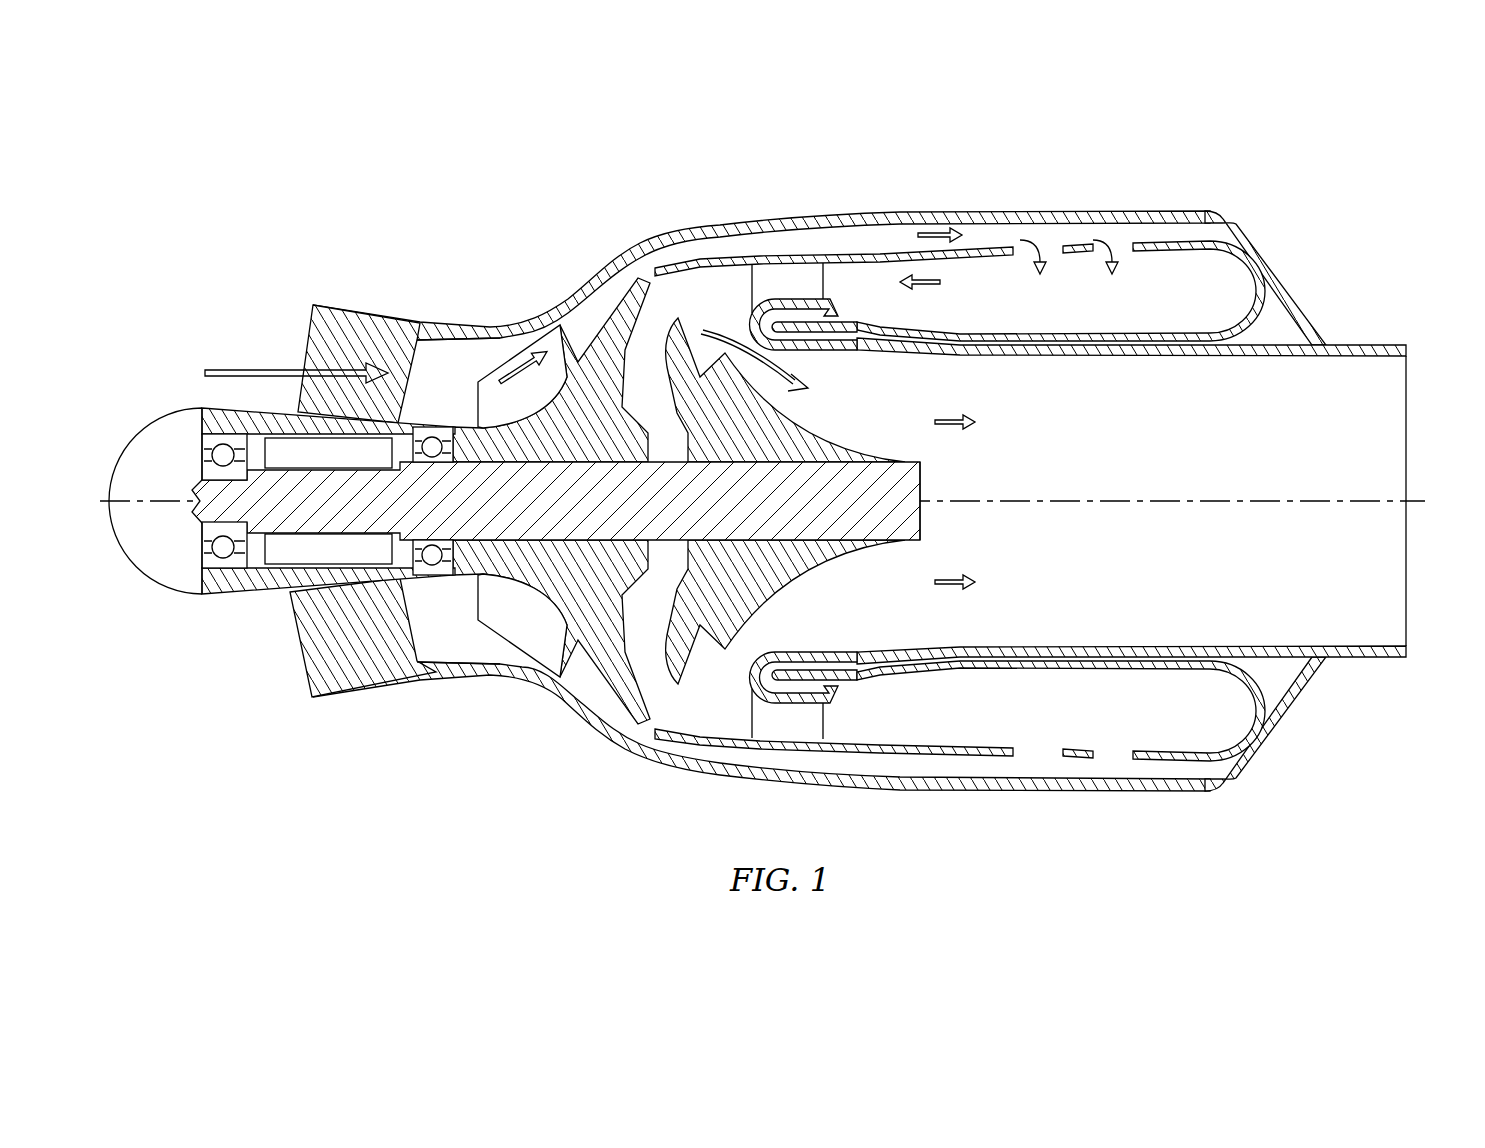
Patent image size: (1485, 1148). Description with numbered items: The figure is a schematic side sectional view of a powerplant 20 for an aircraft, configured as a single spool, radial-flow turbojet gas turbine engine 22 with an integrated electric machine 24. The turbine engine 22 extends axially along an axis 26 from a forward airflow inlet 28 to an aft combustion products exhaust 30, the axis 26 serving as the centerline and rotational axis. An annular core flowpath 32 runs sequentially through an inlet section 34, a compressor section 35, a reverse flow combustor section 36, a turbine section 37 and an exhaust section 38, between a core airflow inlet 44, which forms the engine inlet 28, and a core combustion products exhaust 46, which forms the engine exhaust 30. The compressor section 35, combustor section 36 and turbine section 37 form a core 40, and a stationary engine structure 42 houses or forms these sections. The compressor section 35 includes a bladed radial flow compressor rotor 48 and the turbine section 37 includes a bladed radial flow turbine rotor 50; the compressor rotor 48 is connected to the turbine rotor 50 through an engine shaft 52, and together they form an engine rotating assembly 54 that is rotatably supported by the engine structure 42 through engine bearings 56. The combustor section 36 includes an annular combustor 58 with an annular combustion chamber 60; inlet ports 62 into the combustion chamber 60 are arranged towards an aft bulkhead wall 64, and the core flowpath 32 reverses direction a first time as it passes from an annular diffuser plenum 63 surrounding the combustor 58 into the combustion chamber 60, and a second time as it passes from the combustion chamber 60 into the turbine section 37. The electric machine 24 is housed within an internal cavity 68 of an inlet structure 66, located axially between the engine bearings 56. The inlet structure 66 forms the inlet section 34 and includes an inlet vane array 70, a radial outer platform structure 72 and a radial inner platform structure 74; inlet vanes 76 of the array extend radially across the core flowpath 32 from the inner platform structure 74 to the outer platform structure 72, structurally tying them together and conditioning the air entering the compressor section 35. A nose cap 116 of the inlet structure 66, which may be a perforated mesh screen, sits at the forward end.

The powerplant 20 is at (732, 494).
The turbine engine 22 is at (732, 494).
The electric machine 24 is at (290, 576).
The axis 26 is at (1310, 505).
The airflow inlet 28 is at (305, 328).
The combustion products exhaust 30 is at (1440, 501).
The core flowpath 32 is at (435, 390).
The inlet section 34 is at (363, 453).
The compressor section 35 is at (538, 292).
The combustor section 36 is at (989, 243).
The turbine section 37 is at (683, 290).
The exhaust section 38 is at (1112, 499).
The core 40 is at (761, 228).
The engine structure 42 is at (714, 792).
The airflow inlet 44 is at (305, 328).
The combustion products exhaust 46 is at (1407, 436).
The compressor rotor 48 is at (522, 664).
The turbine rotor 50 is at (778, 572).
The engine shaft 52 is at (606, 504).
The engine rotating assembly 54 is at (934, 477).
The engine bearings 56 is at (198, 588).
The combustor 58 is at (959, 765).
The combustion chamber 60 is at (994, 499).
The inlet ports 62 is at (1118, 770).
The diffuser plenum 63 is at (1197, 229).
The aft bulkhead wall 64 is at (1270, 708).
The inlet structure 66 is at (378, 296).
The internal cavity 68 is at (250, 576).
The inlet vane array 70 is at (288, 355).
The radial outer platform structure 72 is at (343, 308).
The radial inner platform structure 74 is at (151, 472).
The inlet vanes 76 is at (437, 347).
The nose cap 116 is at (108, 465).